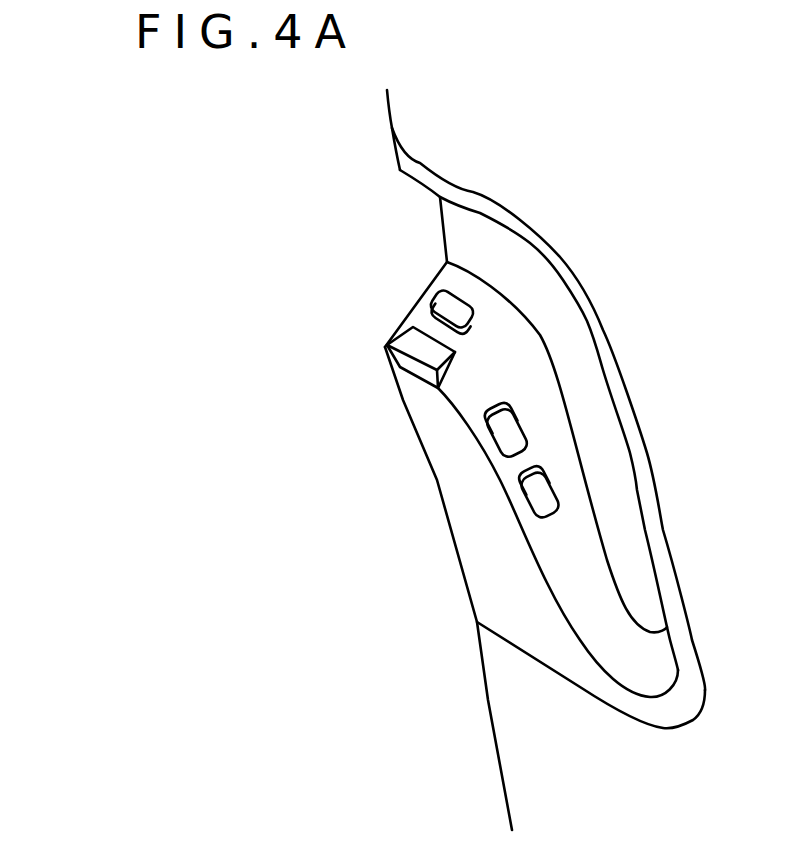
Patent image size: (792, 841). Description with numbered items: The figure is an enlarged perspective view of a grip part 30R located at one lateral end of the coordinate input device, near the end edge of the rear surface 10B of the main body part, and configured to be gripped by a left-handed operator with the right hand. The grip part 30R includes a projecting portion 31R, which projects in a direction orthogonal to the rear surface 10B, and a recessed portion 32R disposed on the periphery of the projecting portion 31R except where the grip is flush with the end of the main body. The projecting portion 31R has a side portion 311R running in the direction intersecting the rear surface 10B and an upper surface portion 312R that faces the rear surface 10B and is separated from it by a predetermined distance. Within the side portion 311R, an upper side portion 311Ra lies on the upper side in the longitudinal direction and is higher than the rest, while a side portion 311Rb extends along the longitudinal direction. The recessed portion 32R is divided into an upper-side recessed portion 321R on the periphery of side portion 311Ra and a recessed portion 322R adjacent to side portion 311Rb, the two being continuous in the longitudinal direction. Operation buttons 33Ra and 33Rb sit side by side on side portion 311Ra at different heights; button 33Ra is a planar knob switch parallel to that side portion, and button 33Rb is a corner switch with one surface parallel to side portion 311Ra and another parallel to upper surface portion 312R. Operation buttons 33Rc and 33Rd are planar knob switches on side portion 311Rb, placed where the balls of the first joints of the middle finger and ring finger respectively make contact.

The rear surface 10B is at (523, 750).
The grip part 30R is at (388, 420).
The projecting portion 31R is at (440, 468).
The side portion 311R is at (583, 543).
The side portion 311Ra is at (456, 278).
The side portion 311Rb is at (580, 510).
The upper surface portion 312R is at (470, 530).
The recessed portion 32R is at (548, 395).
The upper-side recessed portion 321R is at (647, 145).
The recessed portion 322R is at (592, 387).
The operation button 33Ra is at (442, 306).
The operation button 33Rb is at (408, 342).
The operation button 33Rc is at (513, 430).
The operation button 33Rd is at (542, 488).